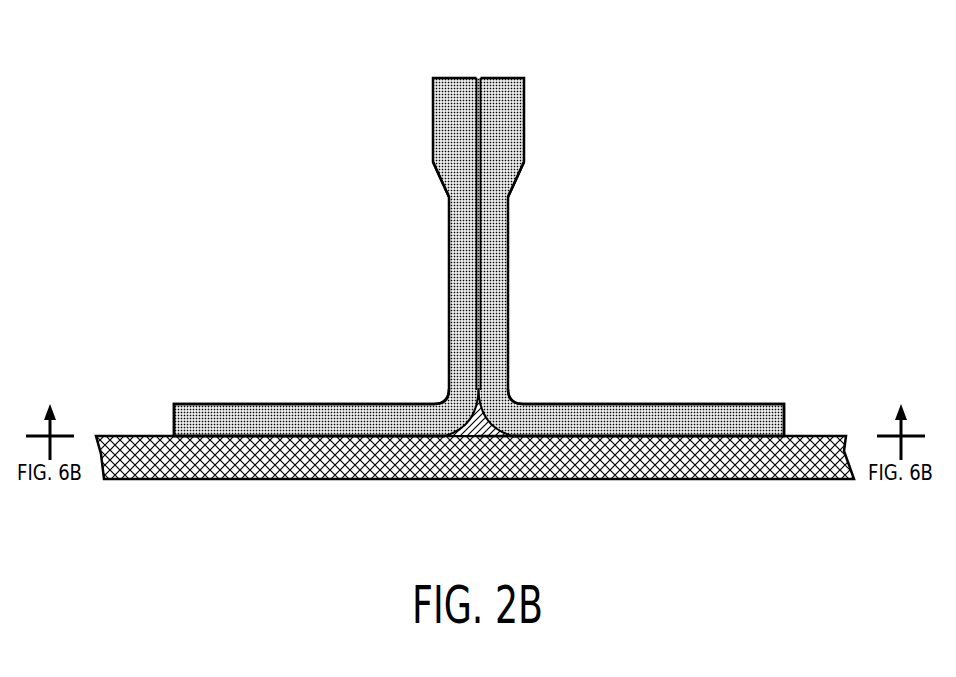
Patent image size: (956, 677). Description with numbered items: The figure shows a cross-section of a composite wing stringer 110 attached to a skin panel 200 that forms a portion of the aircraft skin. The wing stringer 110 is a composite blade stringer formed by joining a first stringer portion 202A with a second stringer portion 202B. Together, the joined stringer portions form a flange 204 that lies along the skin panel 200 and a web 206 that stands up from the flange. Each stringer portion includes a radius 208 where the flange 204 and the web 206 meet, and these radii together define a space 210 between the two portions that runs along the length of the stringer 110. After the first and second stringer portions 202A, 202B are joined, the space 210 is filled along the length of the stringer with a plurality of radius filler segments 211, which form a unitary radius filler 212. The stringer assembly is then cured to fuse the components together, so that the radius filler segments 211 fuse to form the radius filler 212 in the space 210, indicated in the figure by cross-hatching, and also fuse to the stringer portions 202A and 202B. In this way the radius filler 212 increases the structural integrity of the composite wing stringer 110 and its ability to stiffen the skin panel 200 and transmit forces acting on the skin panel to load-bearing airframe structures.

The wing stringer 110 is at (479, 266).
The skin panel 200 is at (172, 480).
The first stringer portion 202A is at (448, 258).
The second stringer portion 202B is at (497, 253).
The flange 204 is at (225, 388).
The web 206 is at (431, 213).
The radius 208 is at (542, 381).
The space 210 is at (477, 423).
The radius filler segments 211 is at (493, 450).
The unitary radius filler 212 is at (514, 450).